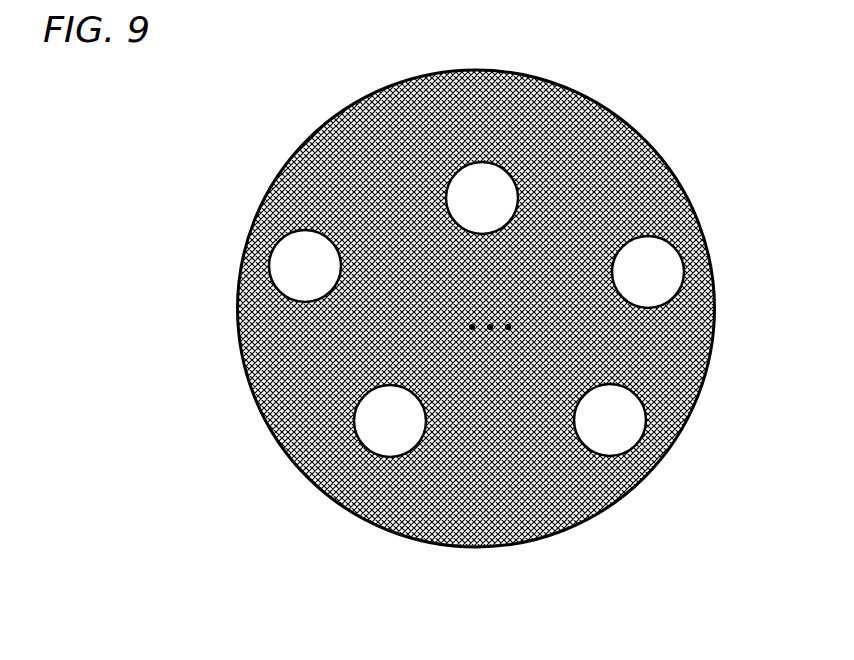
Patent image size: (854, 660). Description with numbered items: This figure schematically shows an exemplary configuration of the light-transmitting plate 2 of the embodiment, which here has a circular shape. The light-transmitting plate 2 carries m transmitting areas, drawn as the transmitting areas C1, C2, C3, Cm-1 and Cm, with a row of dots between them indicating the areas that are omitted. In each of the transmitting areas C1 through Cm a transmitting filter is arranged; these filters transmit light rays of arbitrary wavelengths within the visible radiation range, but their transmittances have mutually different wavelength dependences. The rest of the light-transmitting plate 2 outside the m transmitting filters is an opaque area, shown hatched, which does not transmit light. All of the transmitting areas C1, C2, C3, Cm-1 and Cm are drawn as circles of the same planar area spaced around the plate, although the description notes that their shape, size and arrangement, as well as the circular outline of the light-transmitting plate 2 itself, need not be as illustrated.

The light-transmitting plate 2 is at (495, 308).
The transmitting area C1 is at (305, 266).
The transmitting area C2 is at (482, 198).
The transmitting area C3 is at (648, 272).
The transmitting area Cm-1 is at (390, 421).
The transmitting area Cm is at (610, 420).